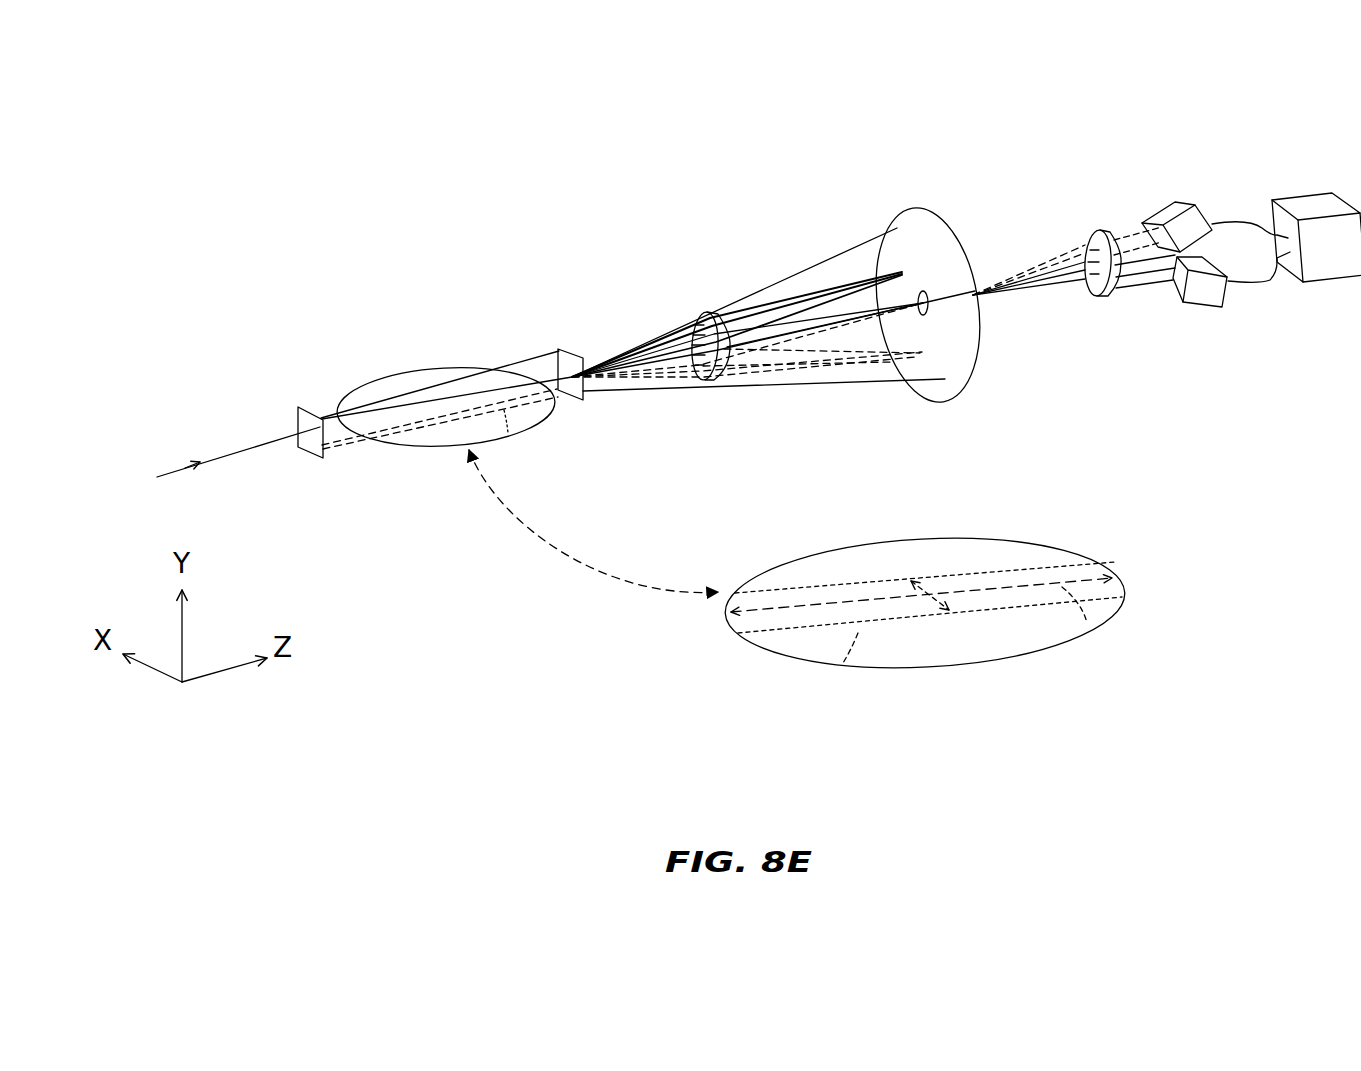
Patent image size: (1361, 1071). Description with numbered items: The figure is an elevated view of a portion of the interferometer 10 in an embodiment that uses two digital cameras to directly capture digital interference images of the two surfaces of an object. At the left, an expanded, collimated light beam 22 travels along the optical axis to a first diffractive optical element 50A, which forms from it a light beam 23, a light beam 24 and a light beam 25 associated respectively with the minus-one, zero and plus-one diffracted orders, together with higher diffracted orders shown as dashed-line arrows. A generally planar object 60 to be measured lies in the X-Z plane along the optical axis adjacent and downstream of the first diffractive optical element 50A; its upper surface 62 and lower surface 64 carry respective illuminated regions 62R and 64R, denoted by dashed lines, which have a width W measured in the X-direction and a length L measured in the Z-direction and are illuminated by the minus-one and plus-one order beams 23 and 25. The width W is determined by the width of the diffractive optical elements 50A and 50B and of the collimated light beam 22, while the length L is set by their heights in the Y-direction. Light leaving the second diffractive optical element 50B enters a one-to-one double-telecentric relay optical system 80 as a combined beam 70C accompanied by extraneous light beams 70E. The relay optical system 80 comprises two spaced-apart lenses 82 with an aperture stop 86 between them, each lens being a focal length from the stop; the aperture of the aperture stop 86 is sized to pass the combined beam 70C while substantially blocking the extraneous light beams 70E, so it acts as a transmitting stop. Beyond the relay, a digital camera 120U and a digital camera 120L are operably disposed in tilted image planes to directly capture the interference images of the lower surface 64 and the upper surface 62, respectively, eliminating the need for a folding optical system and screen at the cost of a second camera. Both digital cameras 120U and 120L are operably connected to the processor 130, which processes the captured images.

The interferometer 10 is at (294, 204).
The collimated light beam 22 is at (237, 452).
The light beam 23 is at (377, 430).
The light beam 24 is at (388, 400).
The light beam 25 is at (360, 410).
The first diffractive optical element 50A is at (305, 410).
The second diffractive optical element 50B is at (573, 400).
The object 60 is at (747, 523).
The upper surface 62 is at (453, 370).
The region of upper surface 62R is at (1035, 577).
The lower surface 64 is at (508, 433).
The region of lower surface 64R is at (1092, 625).
The length L is at (985, 588).
The width W is at (925, 592).
The relay optical system 80 is at (873, 315).
The lens 82 is at (710, 381).
The aperture stop 86 is at (897, 232).
The extraneous light beams 70E is at (842, 287).
The combined beam 70C is at (833, 340).
The digital camera 120L is at (1168, 212).
The digital camera 120U is at (1207, 287).
The processor 130 is at (1302, 192).